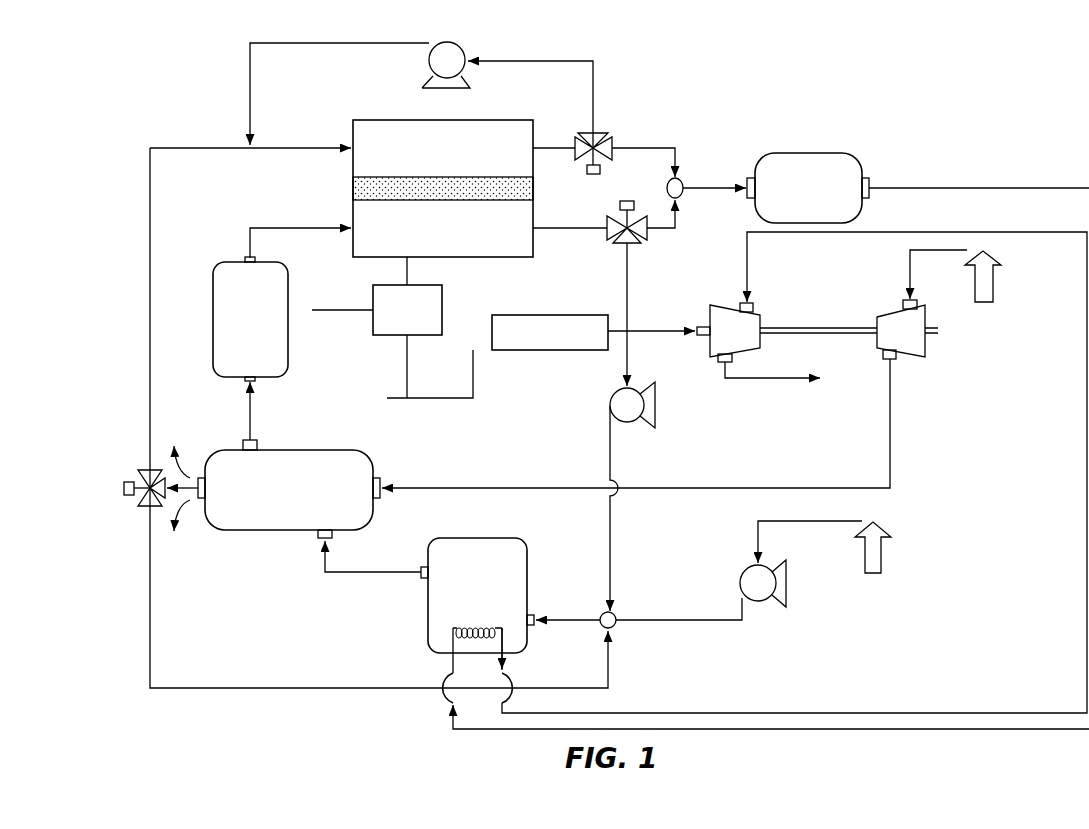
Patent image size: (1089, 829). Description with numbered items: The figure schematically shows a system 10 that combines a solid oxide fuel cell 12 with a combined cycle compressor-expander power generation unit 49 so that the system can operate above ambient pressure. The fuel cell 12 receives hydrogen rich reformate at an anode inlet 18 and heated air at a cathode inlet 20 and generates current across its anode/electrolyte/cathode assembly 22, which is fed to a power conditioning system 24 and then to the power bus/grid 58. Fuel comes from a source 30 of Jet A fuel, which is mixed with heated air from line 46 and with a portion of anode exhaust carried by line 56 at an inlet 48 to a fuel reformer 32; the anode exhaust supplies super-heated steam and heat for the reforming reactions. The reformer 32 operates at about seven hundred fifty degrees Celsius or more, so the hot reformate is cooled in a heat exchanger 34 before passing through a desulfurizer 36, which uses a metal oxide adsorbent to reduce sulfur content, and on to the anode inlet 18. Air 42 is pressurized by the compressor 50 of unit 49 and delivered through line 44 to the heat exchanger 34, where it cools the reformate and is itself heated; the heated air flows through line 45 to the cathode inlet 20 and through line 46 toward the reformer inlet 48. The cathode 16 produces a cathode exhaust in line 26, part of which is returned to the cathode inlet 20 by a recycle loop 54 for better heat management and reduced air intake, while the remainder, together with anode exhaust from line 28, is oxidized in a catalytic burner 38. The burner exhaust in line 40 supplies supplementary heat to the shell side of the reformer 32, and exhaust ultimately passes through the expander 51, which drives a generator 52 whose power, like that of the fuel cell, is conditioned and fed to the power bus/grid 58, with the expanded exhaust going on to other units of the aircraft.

The system 10 is at (876, 104).
The solid oxide fuel cell 12 is at (411, 94).
The cathode 16 is at (371, 120).
The anode inlet 18 is at (288, 228).
The cathode inlet 20 is at (286, 147).
The anode/electrolyte/cathode assembly 22 is at (500, 120).
The power conditioning system 24 is at (442, 297).
The cathode exhaust line 26 is at (553, 148).
The anode exhaust line 28 is at (570, 228).
The source of jet fuel 30 is at (884, 555).
The fuel reformer 32 is at (428, 592).
The heat exchanger 34 is at (265, 532).
The desulfurizer 36 is at (288, 350).
The catalytic burner 38 is at (805, 153).
The exhaust stream line 40 is at (913, 188).
The air 42 is at (994, 285).
The line 44 is at (690, 490).
The line 45 is at (150, 240).
The line 46 is at (252, 688).
The inlet 48 is at (575, 620).
The combined cycle compressor-expander power generation unit 49 is at (865, 281).
The compressor 50 is at (880, 312).
The expander 51 is at (760, 312).
The generator 52 is at (575, 315).
The recycle loop 54 is at (593, 61).
The line 56 is at (630, 292).
The power bus/grid 58 is at (390, 398).